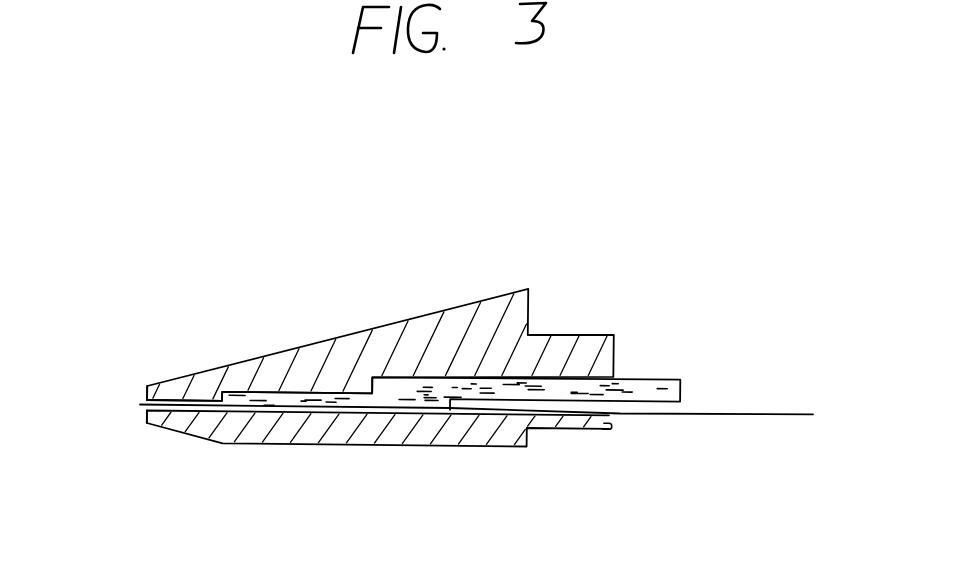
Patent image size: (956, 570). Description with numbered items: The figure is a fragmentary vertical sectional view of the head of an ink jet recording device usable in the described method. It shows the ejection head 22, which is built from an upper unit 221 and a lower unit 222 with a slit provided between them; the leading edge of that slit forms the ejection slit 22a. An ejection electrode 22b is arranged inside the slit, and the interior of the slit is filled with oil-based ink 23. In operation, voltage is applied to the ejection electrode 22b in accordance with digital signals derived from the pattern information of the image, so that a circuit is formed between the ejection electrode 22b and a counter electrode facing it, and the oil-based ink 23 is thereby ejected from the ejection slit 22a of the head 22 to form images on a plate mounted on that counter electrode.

The ejection head 22 is at (588, 290).
The upper unit 221 is at (473, 305).
The lower unit 222 is at (452, 448).
The ejection slit 22a is at (147, 406).
The ejection electrode 22b is at (653, 416).
The oil-based ink 23 is at (562, 403).